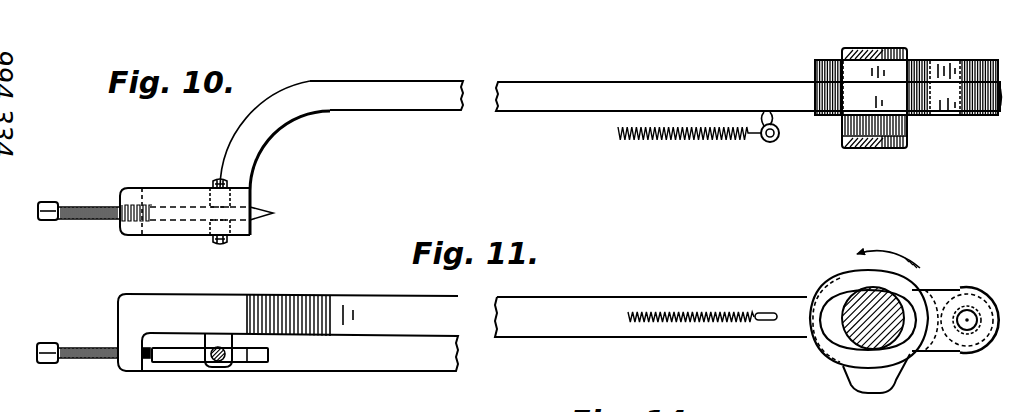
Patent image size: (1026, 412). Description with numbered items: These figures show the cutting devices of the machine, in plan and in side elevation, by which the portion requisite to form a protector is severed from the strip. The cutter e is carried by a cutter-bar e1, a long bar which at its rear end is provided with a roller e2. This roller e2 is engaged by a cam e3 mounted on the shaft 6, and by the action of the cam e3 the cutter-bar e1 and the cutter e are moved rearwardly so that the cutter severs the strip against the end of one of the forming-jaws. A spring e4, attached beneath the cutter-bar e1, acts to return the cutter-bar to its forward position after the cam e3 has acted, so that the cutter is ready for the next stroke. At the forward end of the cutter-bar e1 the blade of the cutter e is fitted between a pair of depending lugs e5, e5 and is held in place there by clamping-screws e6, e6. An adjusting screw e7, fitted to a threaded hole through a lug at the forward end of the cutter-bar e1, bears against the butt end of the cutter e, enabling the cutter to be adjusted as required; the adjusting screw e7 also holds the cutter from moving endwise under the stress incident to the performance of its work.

In FIG. 10, the cutter e is at (256, 211).
In FIG. 11, the cutter e is at (258, 364).
In FIG. 10, the cutter-bar e1 is at (568, 92).
In FIG. 11, the cutter-bar e1 is at (443, 341).
In FIG. 10, the roller e2 is at (1001, 92).
In FIG. 11, the roller e2 is at (968, 288).
In FIG. 10, the cam e3 is at (815, 67).
In FIG. 11, the cam e3 is at (893, 381).
In FIG. 10, the spring e4 is at (672, 140).
In FIG. 11, the spring e4 is at (678, 324).
In FIG. 10, the depending lugs e5 is at (211, 199).
In FIG. 11, the depending lugs e5 is at (213, 369).
In FIG. 10, the clamping-screws e6 is at (222, 182).
In FIG. 11, the clamping-screws e6 is at (228, 370).
In FIG. 10, the adjusting screw e7 is at (72, 218).
In FIG. 11, the adjusting screw e7 is at (73, 343).
In FIG. 10, the shaft 6 is at (843, 150).
In FIG. 11, the shaft 6 is at (846, 334).